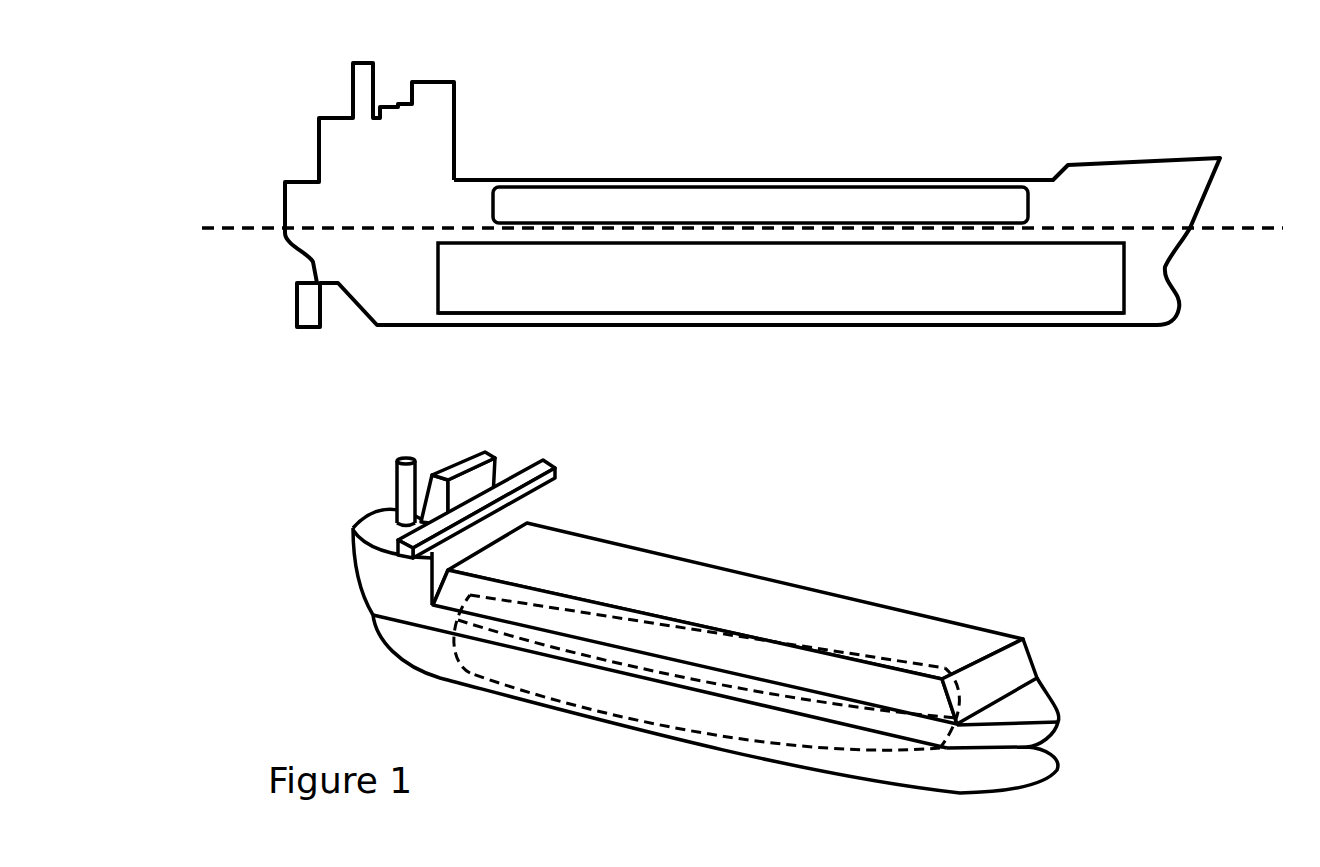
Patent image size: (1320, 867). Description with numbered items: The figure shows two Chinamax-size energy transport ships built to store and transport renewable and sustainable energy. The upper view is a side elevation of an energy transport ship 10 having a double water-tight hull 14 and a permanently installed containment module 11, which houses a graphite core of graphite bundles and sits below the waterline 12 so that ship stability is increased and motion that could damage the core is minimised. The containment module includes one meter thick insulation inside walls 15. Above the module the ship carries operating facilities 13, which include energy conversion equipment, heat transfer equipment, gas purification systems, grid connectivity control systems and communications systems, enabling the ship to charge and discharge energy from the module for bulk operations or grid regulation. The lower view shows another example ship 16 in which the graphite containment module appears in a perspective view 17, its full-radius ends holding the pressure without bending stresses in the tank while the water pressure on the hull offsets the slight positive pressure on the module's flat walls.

The energy transport ship 10 is at (377, 173).
The containment module 11 is at (587, 272).
The waterline 12 is at (1248, 225).
The operating facilities 13 is at (823, 200).
The double water-tight hull 14 is at (527, 327).
The insulation inside walls 15 is at (867, 313).
The example ship 16 is at (387, 580).
The perspective view of containment module 17 is at (628, 690).